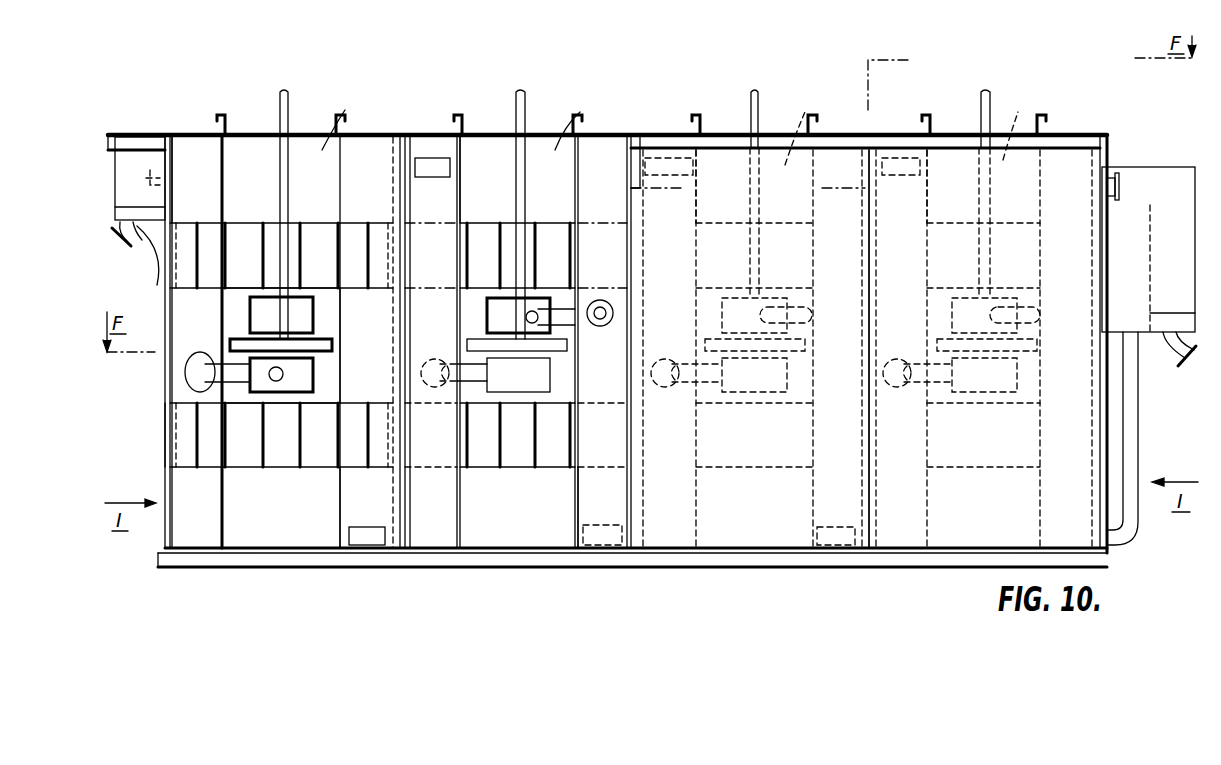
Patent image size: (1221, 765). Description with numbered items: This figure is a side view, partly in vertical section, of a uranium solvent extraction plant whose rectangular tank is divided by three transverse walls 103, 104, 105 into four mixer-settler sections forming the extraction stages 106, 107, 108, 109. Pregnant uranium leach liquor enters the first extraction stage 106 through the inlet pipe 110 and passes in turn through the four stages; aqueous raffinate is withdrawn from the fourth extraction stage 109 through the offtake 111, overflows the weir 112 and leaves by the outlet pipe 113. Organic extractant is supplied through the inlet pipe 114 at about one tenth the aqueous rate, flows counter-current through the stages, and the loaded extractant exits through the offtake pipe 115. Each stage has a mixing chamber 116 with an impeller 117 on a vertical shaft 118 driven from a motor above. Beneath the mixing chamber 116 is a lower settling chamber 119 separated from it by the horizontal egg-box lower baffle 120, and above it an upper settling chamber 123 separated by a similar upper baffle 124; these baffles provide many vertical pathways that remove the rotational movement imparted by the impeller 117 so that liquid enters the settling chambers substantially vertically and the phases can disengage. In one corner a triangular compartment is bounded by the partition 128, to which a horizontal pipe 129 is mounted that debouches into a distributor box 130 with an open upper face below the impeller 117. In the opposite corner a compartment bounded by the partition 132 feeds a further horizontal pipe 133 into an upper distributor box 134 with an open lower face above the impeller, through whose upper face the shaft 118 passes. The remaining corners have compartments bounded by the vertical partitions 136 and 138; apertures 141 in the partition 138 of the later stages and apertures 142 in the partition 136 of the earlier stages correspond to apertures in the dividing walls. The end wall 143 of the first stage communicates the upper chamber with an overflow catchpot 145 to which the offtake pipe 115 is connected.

The transverse wall 103 is at (399, 185).
The transverse wall 104 is at (631, 181).
The transverse wall 105 is at (868, 211).
The first extraction stage 106 is at (245, 160).
The second extraction stage 107 is at (481, 165).
The third extraction stage 108 is at (724, 160).
The fourth extraction stage 109 is at (958, 165).
The inlet pipe 110 is at (160, 132).
The offtake 111 is at (1128, 448).
The weir 112 is at (1153, 232).
The outlet pipe 113 is at (1172, 358).
The inlet pipe 114 is at (1106, 184).
The offtake pipe 115 is at (140, 264).
The mixing chamber 116 is at (232, 318).
The impeller 117 is at (330, 351).
The vertical shaft 118 is at (286, 110).
The lower settling chamber 119 is at (266, 540).
The lower baffle 120 is at (248, 450).
The upper settling chamber 123 is at (680, 127).
The upper baffle 124 is at (245, 236).
The partition 128 is at (210, 212).
The horizontal pipe 129 is at (185, 375).
The distributor box 130 is at (318, 380).
The partition 132 is at (592, 484).
The horizontal pipe 133 is at (562, 335).
The upper distributor box 134 is at (316, 318).
The vertical partition 136 is at (357, 505).
The vertical partition 138 is at (402, 209).
The aperture 141 is at (430, 178).
The aperture 142 is at (368, 540).
The end wall 143 is at (166, 434).
The overflow catchpot 145 is at (112, 195).